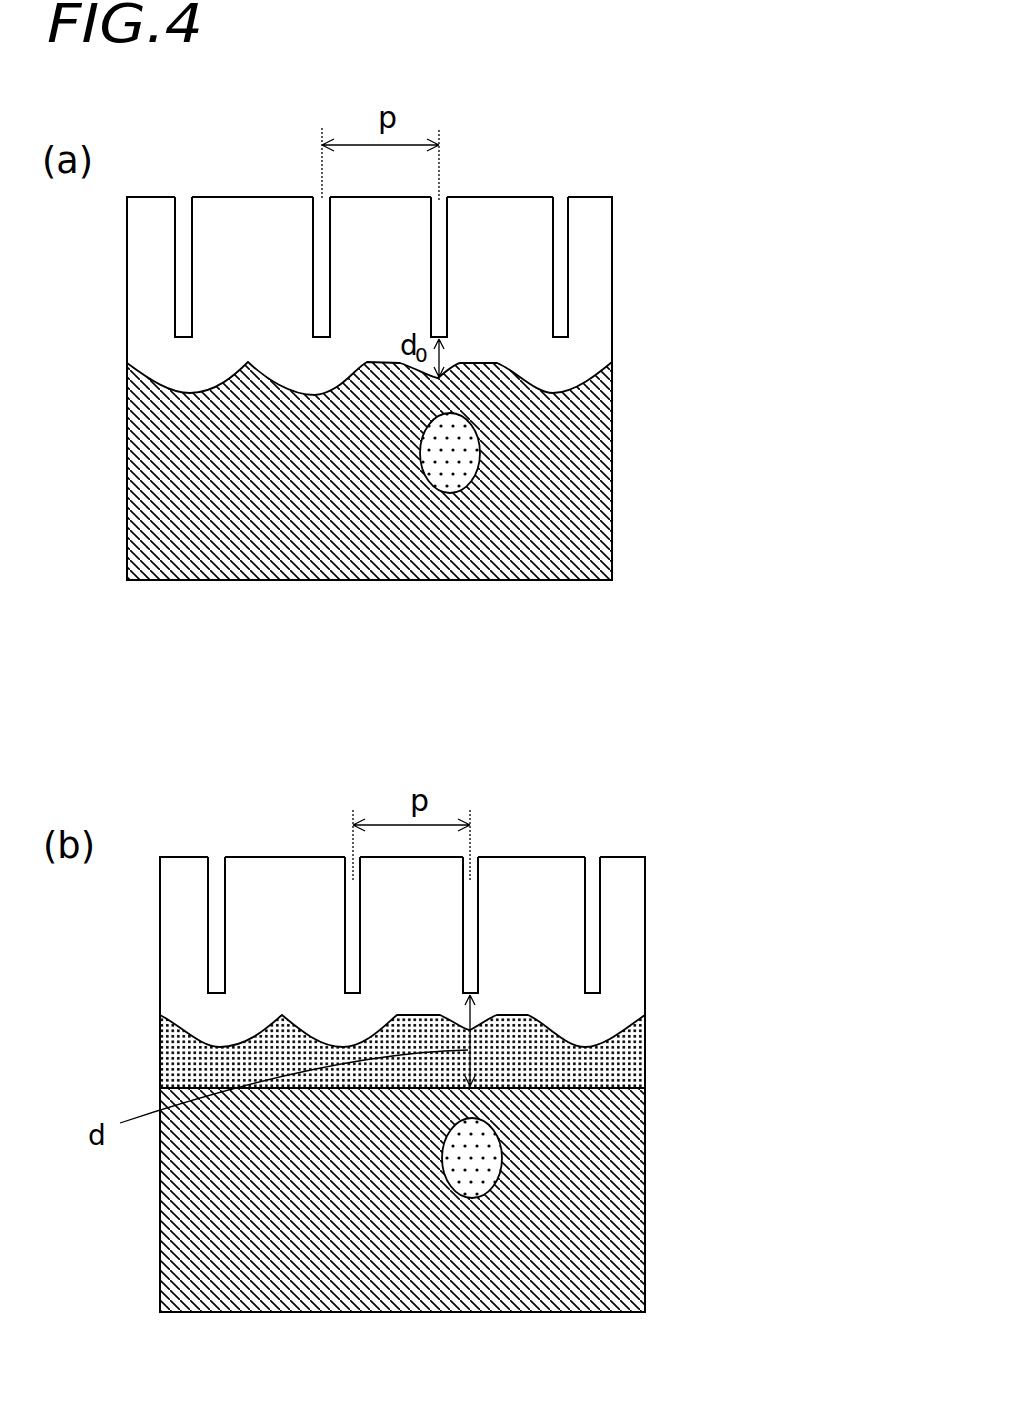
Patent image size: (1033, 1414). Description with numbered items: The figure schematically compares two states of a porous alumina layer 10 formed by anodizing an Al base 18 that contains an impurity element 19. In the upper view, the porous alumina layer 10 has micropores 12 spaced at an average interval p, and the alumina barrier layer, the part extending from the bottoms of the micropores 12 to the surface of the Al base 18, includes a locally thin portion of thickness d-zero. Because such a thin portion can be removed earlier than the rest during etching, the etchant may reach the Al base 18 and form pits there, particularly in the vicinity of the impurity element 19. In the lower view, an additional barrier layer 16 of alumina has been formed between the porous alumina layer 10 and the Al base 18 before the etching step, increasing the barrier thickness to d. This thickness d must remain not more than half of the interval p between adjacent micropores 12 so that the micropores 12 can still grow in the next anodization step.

The porous alumina layer 10 is at (605, 280).
The micropore 12 is at (562, 197).
The additional barrier layer 16 is at (645, 1062).
The Al base 18 is at (603, 522).
The impurity element 19 is at (462, 452).